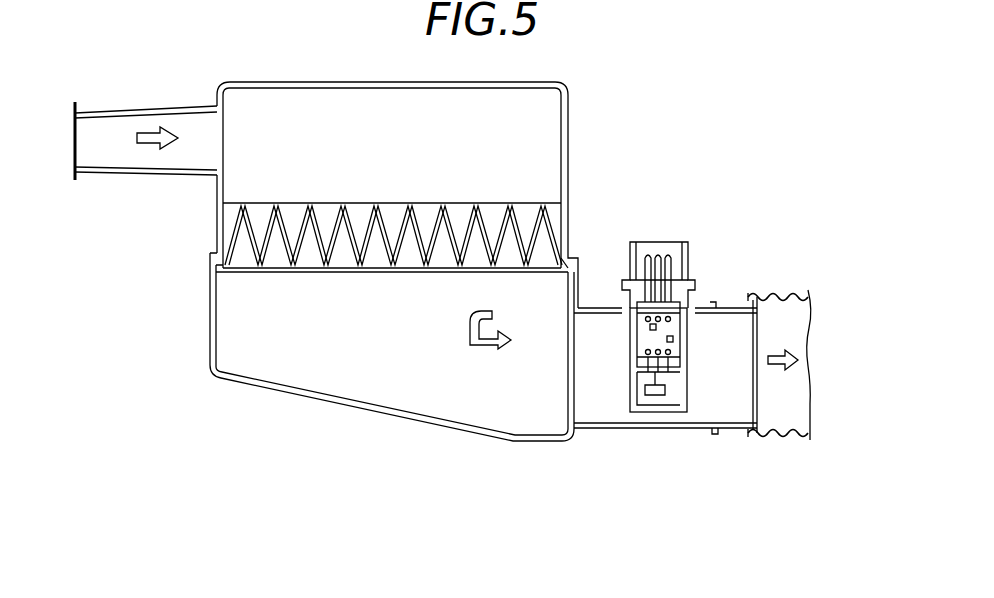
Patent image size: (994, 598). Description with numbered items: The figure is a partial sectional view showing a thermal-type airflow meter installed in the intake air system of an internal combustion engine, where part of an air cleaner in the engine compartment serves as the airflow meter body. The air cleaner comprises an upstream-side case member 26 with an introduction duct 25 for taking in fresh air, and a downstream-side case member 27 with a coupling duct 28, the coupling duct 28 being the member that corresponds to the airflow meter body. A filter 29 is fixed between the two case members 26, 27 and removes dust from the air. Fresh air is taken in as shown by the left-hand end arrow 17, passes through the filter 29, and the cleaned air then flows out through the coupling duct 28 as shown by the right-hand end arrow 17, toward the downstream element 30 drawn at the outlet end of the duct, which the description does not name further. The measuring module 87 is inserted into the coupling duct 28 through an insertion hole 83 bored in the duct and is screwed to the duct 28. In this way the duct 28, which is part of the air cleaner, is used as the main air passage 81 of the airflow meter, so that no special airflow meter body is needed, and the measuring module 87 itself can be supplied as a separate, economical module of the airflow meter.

The introduction duct 25 is at (107, 113).
The arrow 17 is at (153, 118).
The upstream-side case member 26 is at (512, 82).
The filter 29 is at (322, 204).
The downstream-side case member 27 is at (210, 335).
The main air passage 81 is at (606, 402).
The coupling duct 28 is at (672, 428).
The measuring module 87 is at (697, 283).
The insertion hole 83 is at (697, 292).
The outlet hose 30 is at (802, 296).